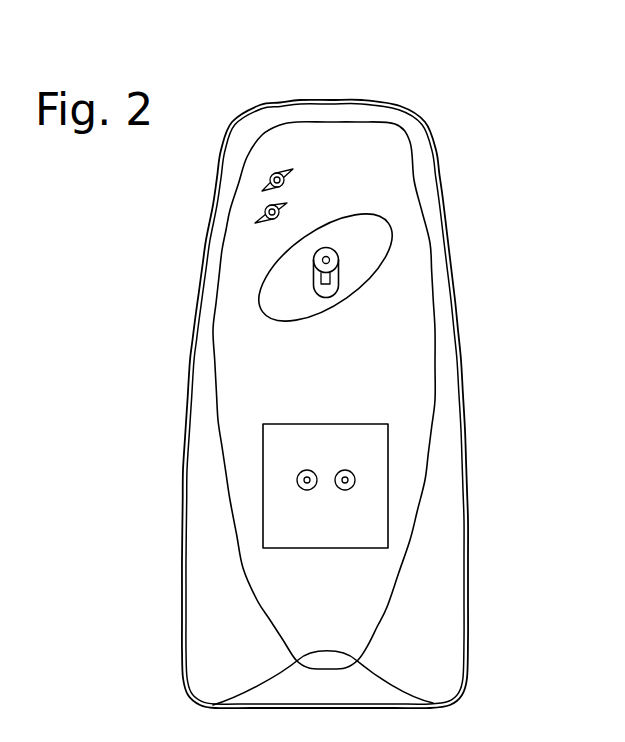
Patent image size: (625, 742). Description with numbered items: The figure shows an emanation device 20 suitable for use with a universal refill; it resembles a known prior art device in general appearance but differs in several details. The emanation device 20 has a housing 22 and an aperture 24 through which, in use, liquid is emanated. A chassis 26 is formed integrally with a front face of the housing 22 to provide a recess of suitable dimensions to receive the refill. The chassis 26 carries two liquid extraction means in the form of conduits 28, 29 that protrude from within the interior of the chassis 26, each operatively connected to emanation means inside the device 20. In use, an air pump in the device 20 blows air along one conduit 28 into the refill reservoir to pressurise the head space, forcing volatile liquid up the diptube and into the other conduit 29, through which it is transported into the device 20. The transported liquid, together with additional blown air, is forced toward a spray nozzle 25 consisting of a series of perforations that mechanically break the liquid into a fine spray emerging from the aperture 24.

The emanation device 20 is at (293, 404).
The housing 22 is at (443, 338).
The aperture 24 is at (313, 275).
The spray nozzle 25 is at (338, 253).
The chassis 26 is at (389, 502).
The conduit 28 is at (352, 473).
The conduit 29 is at (297, 480).